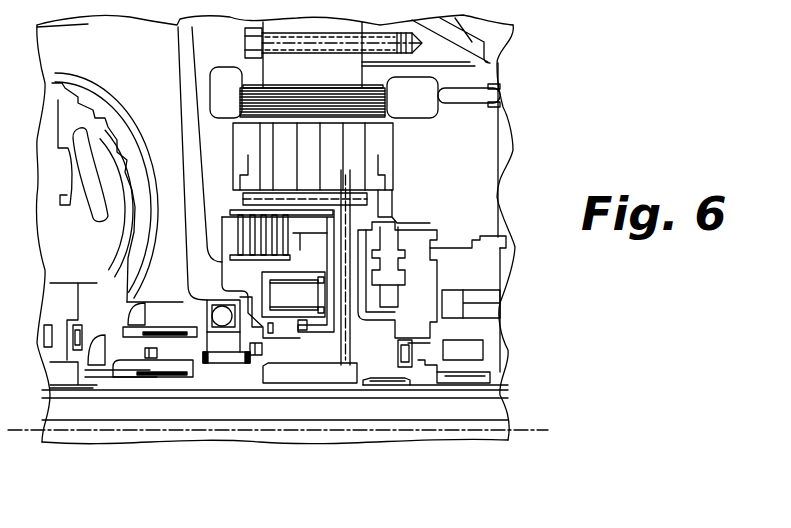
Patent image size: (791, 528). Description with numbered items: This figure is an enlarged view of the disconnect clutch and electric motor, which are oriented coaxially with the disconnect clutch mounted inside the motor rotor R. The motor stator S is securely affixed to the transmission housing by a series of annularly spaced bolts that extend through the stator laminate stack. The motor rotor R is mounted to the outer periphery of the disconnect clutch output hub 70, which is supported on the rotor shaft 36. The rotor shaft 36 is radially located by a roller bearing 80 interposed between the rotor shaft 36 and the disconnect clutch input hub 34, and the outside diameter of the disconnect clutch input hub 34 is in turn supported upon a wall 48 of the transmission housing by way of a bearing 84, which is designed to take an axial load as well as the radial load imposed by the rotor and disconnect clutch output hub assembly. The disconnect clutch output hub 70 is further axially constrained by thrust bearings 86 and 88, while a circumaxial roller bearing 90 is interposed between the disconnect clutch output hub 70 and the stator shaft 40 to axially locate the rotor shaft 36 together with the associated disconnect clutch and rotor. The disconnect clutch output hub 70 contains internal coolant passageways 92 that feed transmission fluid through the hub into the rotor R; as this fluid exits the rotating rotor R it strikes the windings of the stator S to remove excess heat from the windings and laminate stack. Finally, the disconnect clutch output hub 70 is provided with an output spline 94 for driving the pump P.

The wall 48 is at (177, 101).
The motor stator S is at (412, 118).
The motor rotor R is at (393, 157).
The internal coolant passageways 92 is at (348, 277).
The disconnect clutch output hub 70 is at (397, 325).
The pump P is at (490, 330).
The bearing 84 is at (208, 313).
The disconnect clutch input hub 34 is at (218, 362).
The roller bearing 80 is at (227, 360).
The rotor shaft 36 is at (237, 373).
The thrust bearing 86 is at (258, 350).
The stator shaft 40 is at (358, 392).
The circumaxial roller bearing 90 is at (390, 383).
The thrust bearing 88 is at (405, 363).
The output spline 94 is at (447, 383).